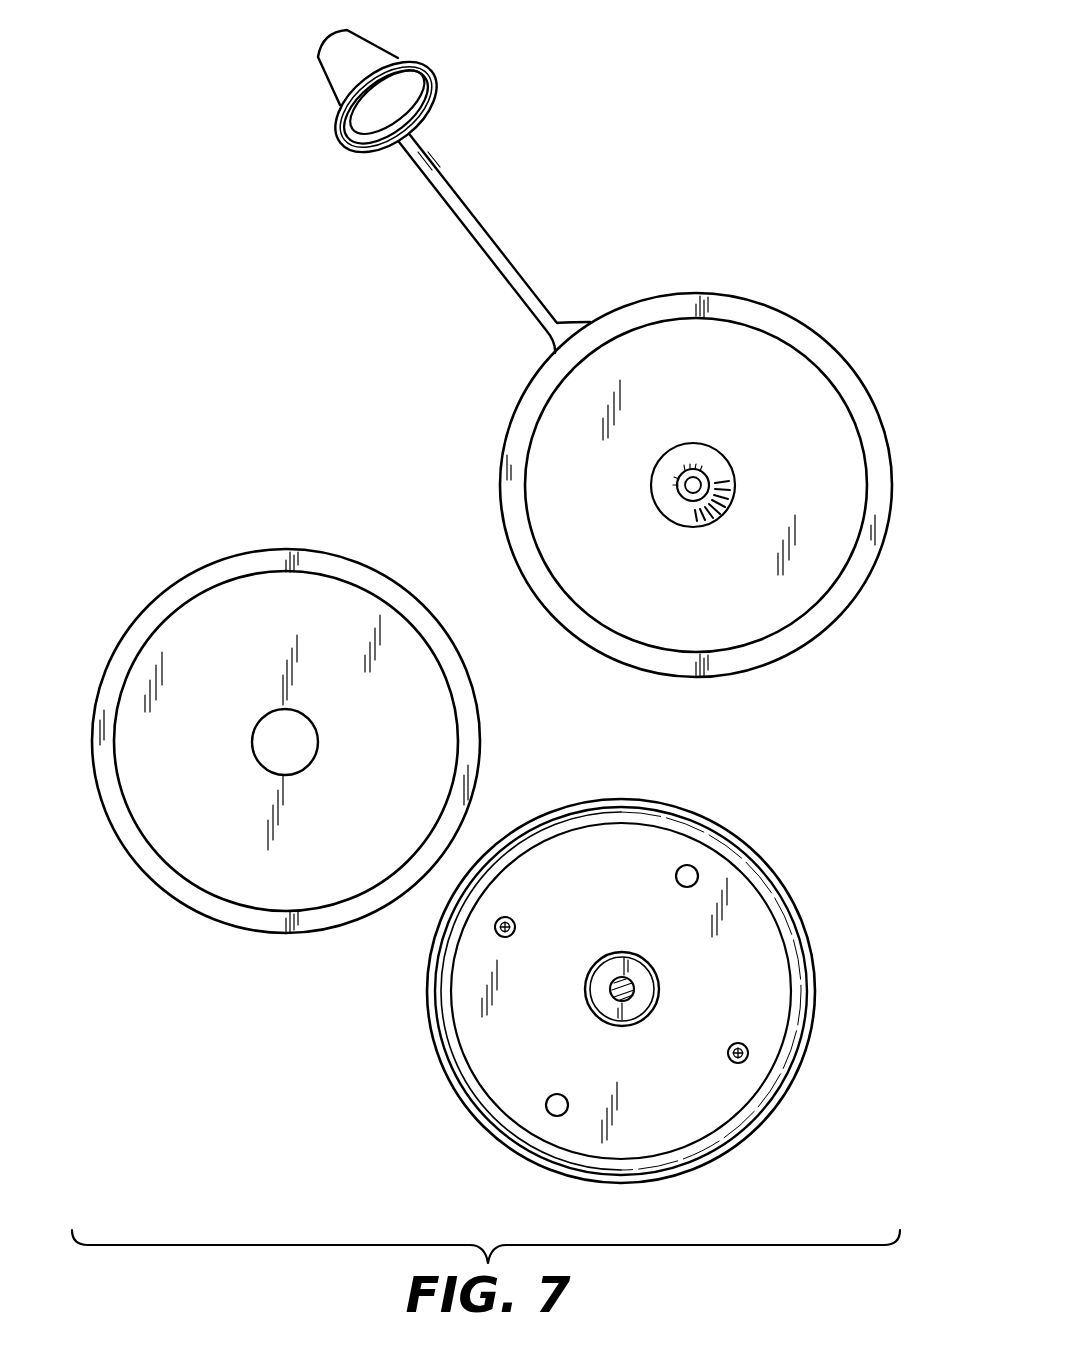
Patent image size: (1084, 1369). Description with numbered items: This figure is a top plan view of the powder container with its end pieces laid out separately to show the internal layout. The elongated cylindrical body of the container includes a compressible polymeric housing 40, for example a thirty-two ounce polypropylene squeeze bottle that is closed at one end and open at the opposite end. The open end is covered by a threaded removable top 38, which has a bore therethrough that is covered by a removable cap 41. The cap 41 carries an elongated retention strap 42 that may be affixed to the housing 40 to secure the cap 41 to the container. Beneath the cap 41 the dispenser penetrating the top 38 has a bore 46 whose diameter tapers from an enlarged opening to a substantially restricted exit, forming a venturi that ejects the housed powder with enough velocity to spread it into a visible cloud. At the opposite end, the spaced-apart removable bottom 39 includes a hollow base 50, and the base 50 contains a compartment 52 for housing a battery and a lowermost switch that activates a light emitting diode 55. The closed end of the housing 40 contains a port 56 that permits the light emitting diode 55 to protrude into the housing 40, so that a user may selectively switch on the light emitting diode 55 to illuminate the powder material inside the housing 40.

The removable top 38 is at (519, 404).
The removable bottom 39 is at (615, 991).
The compressible polymeric housing 40 is at (170, 897).
The cap 41 is at (328, 83).
The retention strap 42 is at (458, 208).
The bore 46 is at (709, 481).
The hollow base 50 is at (795, 948).
The compartment 52 is at (765, 1008).
The light emitting diode 55 is at (583, 990).
The port 56 is at (297, 723).